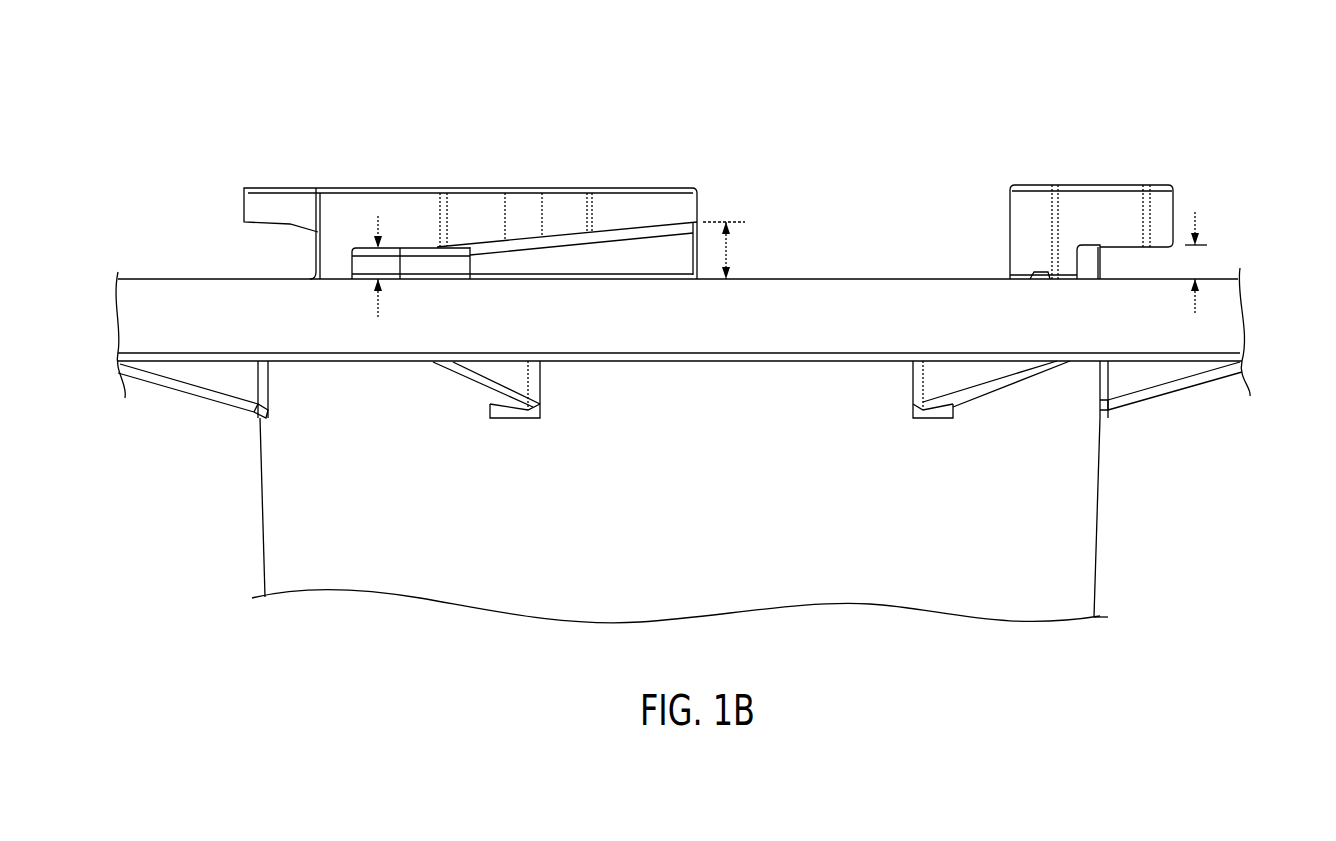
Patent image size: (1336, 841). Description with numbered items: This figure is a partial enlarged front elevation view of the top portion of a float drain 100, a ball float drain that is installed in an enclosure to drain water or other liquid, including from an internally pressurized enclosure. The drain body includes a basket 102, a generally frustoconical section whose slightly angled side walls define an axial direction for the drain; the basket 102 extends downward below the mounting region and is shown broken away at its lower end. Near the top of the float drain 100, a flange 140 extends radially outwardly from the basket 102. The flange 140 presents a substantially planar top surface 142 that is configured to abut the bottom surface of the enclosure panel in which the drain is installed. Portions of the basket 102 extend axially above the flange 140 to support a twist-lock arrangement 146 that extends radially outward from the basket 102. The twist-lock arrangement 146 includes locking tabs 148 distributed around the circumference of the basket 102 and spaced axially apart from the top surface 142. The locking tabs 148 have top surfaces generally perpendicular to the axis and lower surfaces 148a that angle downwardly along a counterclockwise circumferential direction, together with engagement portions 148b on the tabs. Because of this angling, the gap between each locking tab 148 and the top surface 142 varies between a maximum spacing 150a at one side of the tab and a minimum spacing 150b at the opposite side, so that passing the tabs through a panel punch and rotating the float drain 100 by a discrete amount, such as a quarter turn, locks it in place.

The float drain 100 is at (1210, 118).
The basket 102 is at (1128, 525).
The flange 140 is at (943, 275).
The top surface 142 is at (910, 279).
The twist-lock arrangement 146 is at (320, 166).
The locking tabs 148 is at (528, 190).
The lower surfaces 148a is at (558, 243).
The engagement portion 148b is at (340, 262).
The maximum spacing 150a is at (728, 250).
The minimum spacing 150b is at (380, 300).